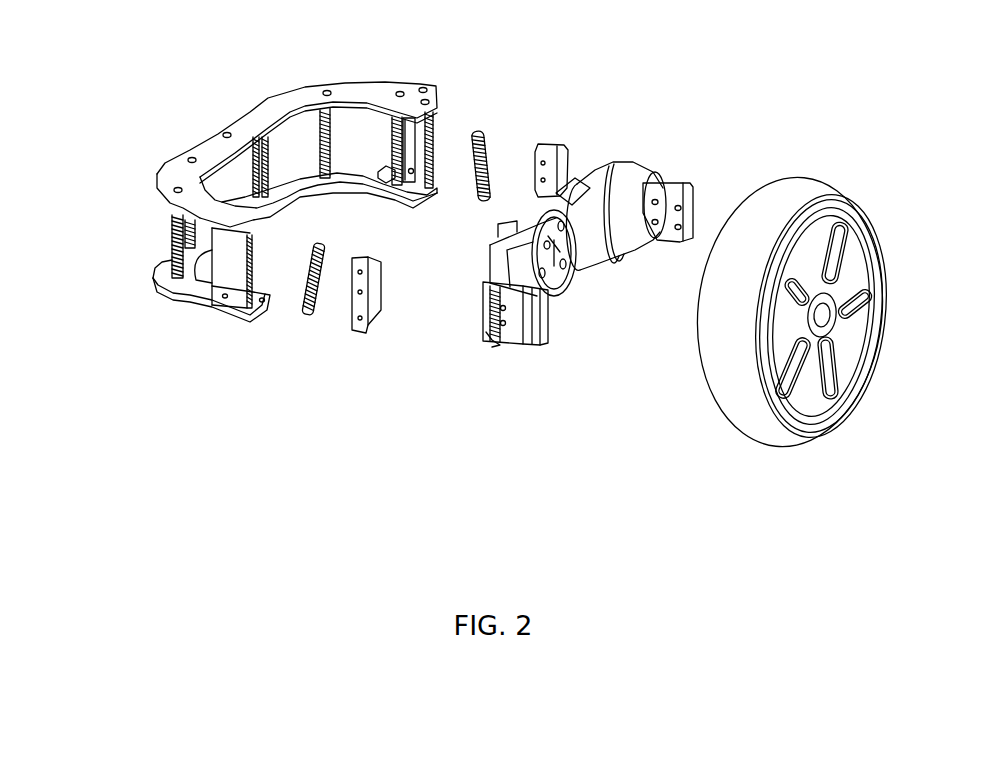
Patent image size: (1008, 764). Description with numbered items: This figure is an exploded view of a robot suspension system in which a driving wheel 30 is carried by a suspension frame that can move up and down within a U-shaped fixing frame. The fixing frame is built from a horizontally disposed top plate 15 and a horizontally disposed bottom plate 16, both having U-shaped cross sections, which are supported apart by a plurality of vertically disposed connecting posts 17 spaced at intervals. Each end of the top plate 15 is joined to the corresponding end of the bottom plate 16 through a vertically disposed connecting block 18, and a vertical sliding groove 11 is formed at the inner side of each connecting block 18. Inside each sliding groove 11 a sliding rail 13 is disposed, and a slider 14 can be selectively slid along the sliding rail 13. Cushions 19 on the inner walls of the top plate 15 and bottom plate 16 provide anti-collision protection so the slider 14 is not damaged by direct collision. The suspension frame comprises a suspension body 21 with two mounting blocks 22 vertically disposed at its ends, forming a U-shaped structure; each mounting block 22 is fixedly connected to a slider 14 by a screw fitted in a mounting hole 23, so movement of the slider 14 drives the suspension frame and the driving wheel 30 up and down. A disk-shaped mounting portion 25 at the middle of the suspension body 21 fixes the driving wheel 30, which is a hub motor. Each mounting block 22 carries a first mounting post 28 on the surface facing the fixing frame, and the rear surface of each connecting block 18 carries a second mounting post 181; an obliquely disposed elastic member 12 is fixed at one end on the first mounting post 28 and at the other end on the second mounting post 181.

The sliding groove 11 is at (410, 150).
The elastic member 12 is at (489, 148).
The sliding rail 13 is at (345, 367).
The slider 14 is at (562, 160).
The top plate 15 is at (213, 153).
The bottom plate 16 is at (173, 292).
The connecting post 17 is at (317, 137).
The connecting block 18 is at (235, 282).
The cushion 19 is at (407, 200).
The second mounting post 181 is at (386, 168).
The suspension body 21 is at (643, 192).
The mounting block 22 is at (512, 333).
The mounting hole 23 is at (492, 335).
The mounting portion 25 is at (545, 290).
The first mounting post 28 is at (487, 328).
The driving wheel 30 is at (745, 383).